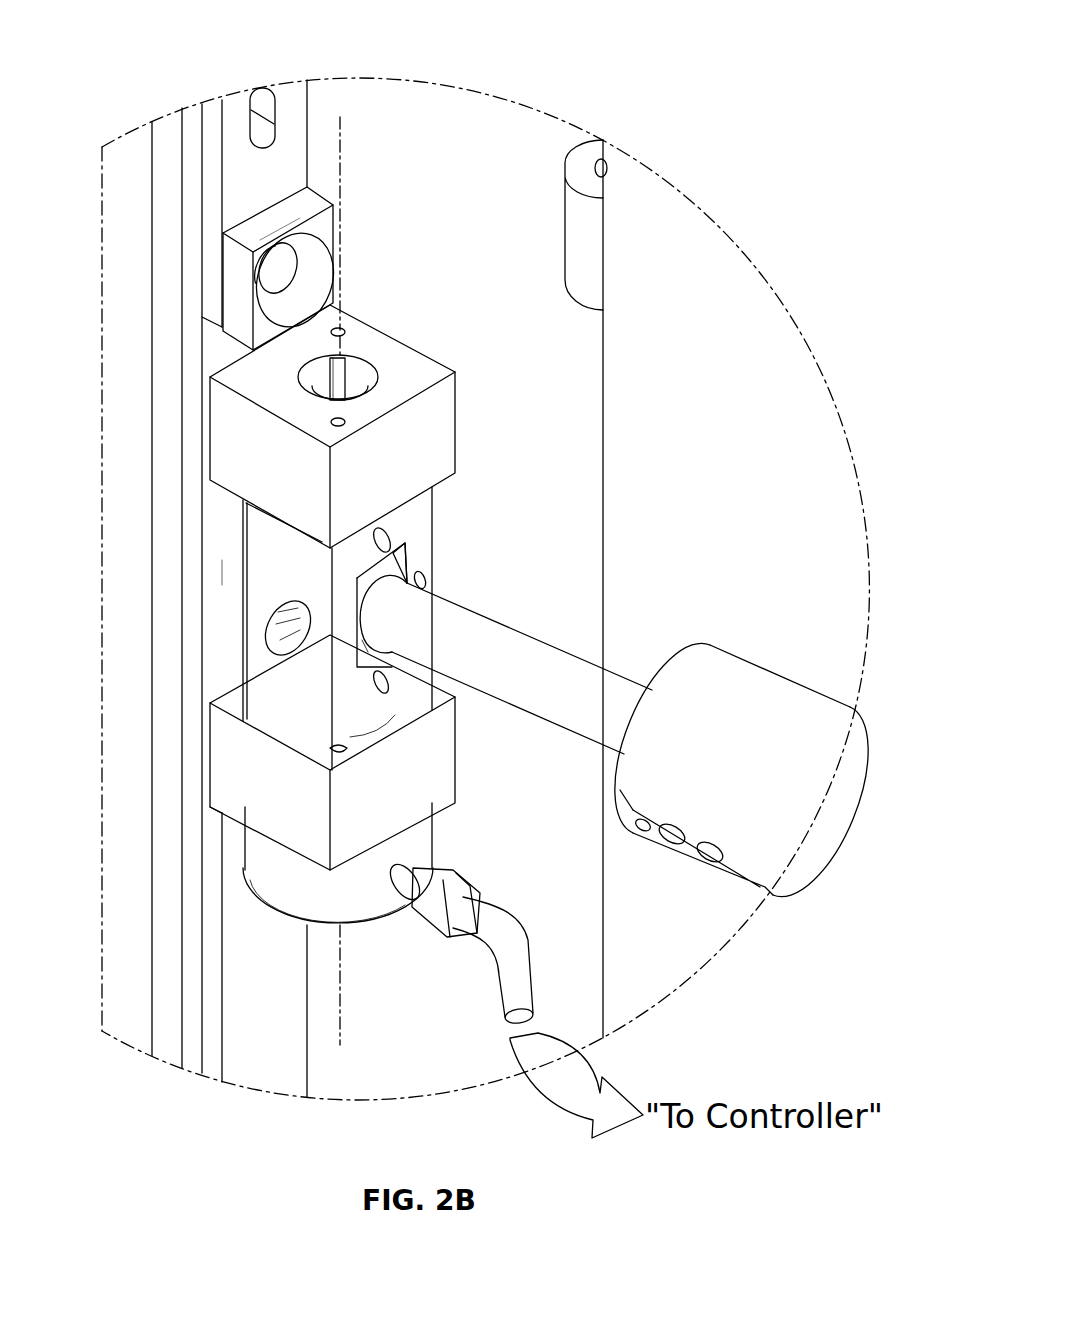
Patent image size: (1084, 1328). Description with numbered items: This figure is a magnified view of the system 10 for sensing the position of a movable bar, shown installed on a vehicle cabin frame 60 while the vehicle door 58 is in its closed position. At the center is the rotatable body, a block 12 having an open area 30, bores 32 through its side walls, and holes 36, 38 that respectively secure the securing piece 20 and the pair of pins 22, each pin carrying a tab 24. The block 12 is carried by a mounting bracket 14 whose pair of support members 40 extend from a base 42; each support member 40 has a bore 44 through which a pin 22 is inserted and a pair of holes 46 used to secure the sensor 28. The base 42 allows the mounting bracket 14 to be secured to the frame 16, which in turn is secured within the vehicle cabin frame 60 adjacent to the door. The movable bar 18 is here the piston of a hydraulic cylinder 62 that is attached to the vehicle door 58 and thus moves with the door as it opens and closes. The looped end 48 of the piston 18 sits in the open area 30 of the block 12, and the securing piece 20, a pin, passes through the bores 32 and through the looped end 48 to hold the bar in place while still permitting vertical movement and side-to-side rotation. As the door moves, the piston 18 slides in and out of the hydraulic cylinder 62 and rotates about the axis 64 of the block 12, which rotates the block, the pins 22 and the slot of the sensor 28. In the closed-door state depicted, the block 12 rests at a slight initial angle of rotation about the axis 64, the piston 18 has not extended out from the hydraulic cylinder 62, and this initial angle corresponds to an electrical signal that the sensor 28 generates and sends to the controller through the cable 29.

The system 10 is at (150, 1088).
The rotatable body 12 is at (440, 500).
The mounting bracket 14 is at (283, 190).
The frame 16 is at (253, 1073).
The movable bar 18 is at (580, 651).
The securing piece 20 is at (282, 640).
The pin 22 is at (358, 385).
The tab 24 is at (345, 377).
The sensor 28 is at (363, 927).
The cable 29 is at (533, 988).
The open area 30 is at (403, 552).
The bore 32 is at (263, 622).
The hole 36 is at (430, 583).
The hole 38 is at (390, 532).
The support member 40 is at (457, 388).
The base 42 is at (223, 572).
The bore 44 is at (313, 374).
The hole 46 is at (340, 328).
The looped end 48 is at (388, 568).
The vehicle door 58 is at (737, 277).
The vehicle cabin frame 60 is at (160, 135).
The hydraulic cylinder 62 is at (757, 662).
The axis 64 is at (340, 152).